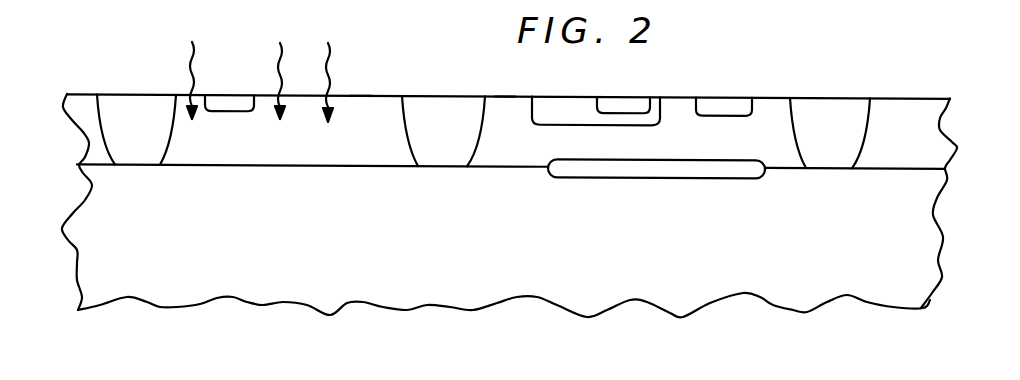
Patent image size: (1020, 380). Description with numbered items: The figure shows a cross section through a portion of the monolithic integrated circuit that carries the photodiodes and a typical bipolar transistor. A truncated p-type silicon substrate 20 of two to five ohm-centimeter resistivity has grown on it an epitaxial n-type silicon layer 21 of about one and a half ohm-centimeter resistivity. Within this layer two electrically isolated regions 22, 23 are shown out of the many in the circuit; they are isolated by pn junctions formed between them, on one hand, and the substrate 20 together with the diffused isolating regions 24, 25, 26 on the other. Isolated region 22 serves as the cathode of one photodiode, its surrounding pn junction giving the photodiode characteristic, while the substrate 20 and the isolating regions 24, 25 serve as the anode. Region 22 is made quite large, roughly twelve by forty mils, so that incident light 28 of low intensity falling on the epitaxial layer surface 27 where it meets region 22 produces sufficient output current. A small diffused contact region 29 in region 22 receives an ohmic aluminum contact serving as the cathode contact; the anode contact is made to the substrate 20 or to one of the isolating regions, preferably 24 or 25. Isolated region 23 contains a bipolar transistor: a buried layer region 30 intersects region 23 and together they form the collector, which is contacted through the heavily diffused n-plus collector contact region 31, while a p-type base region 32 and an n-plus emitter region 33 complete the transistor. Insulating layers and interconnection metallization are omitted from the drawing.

The p-type silicon substrate 20 is at (265, 283).
The epitaxially grown n-type silicon layer 21 is at (84, 103).
The isolated region 22 is at (362, 110).
The isolated region 23 is at (511, 114).
The diffused isolating region 24 is at (125, 108).
The diffused isolating region 25 is at (422, 109).
The diffused isolating region 26 is at (825, 113).
The epitaxial layer surface 27 is at (88, 94).
The incident light 28 is at (280, 43).
The diffused contact region 29 is at (217, 102).
The buried layer region 30 is at (733, 179).
The collector contact region 31 is at (709, 106).
The base region 32 is at (543, 111).
The emitter region 33 is at (607, 108).